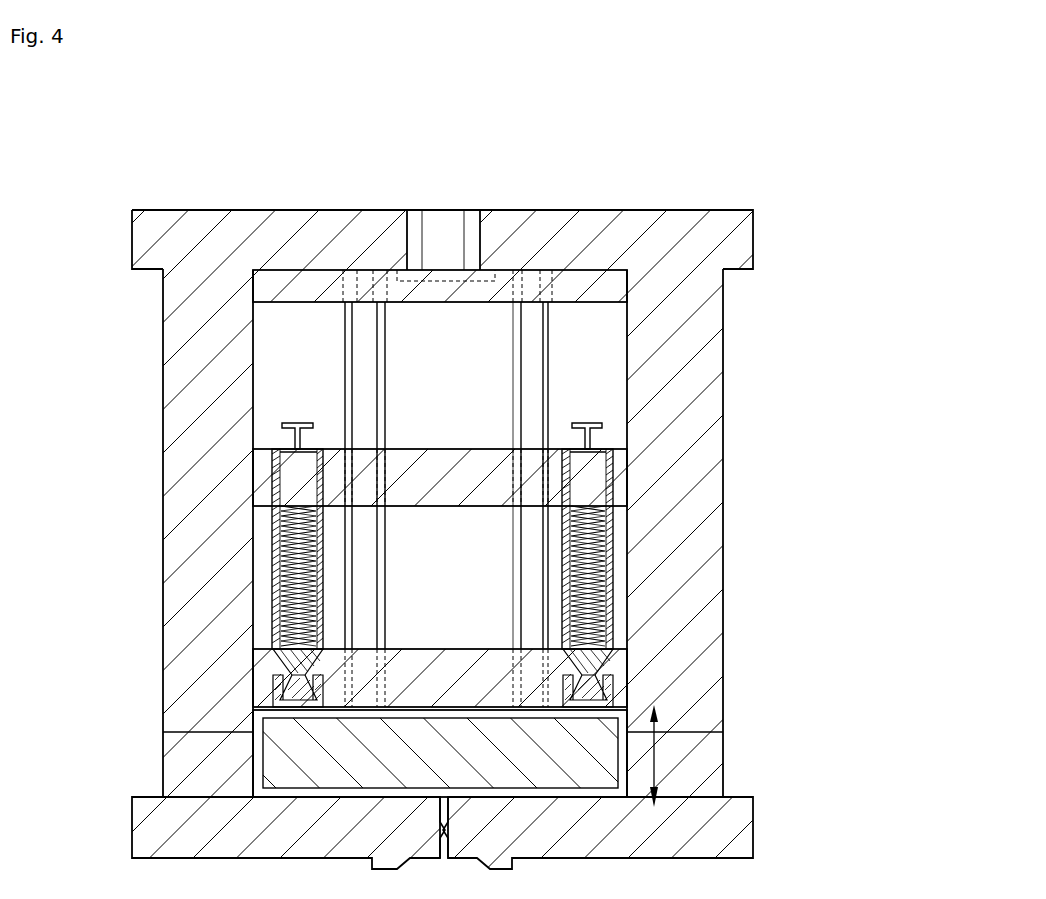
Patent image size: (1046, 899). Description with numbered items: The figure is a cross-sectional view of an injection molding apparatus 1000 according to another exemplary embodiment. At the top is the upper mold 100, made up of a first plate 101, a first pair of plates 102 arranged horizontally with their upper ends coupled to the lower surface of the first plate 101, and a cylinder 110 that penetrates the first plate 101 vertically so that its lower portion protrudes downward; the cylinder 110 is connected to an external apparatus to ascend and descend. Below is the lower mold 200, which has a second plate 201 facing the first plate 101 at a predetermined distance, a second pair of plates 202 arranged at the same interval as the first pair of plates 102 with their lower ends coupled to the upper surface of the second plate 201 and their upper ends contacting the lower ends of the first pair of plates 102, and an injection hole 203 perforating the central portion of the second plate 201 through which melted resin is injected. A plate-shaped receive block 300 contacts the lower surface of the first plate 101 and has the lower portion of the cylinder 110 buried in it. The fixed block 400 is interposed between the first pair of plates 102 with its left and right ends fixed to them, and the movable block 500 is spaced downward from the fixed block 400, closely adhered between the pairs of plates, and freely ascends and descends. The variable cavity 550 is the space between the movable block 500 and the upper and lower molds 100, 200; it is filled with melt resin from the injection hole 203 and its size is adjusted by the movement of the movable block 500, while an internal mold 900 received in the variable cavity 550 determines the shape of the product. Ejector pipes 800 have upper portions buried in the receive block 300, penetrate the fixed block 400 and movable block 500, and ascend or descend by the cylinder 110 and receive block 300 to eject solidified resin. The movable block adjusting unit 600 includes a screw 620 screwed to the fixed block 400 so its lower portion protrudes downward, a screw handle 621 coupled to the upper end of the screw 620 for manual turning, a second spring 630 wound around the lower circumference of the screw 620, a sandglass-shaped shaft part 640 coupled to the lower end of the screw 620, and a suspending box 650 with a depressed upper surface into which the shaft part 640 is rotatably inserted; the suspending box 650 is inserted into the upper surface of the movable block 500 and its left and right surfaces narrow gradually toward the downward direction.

The injection molding apparatus 1000 is at (681, 188).
The upper mold 100 is at (742, 231).
The first plate 101 is at (352, 210).
The first pair of plates 102 is at (678, 368).
The cylinder 110 is at (442, 210).
The receive block 300 is at (616, 291).
The ejector pipe 800 is at (545, 375).
The fixed block 400 is at (423, 462).
The movable block 500 is at (449, 660).
The movable block adjusting unit 600 is at (843, 465).
The screw 620 is at (600, 480).
The screw handle 621 is at (602, 425).
The second spring 630 is at (613, 548).
The shaft part 640 is at (613, 650).
The suspending box 650 is at (613, 683).
The variable cavity 550 is at (622, 743).
The internal mold 900 is at (280, 745).
The lower mold 200 is at (830, 773).
The second plate 201 is at (695, 822).
The second pair of plates 202 is at (210, 790).
The injection hole 203 is at (448, 836).